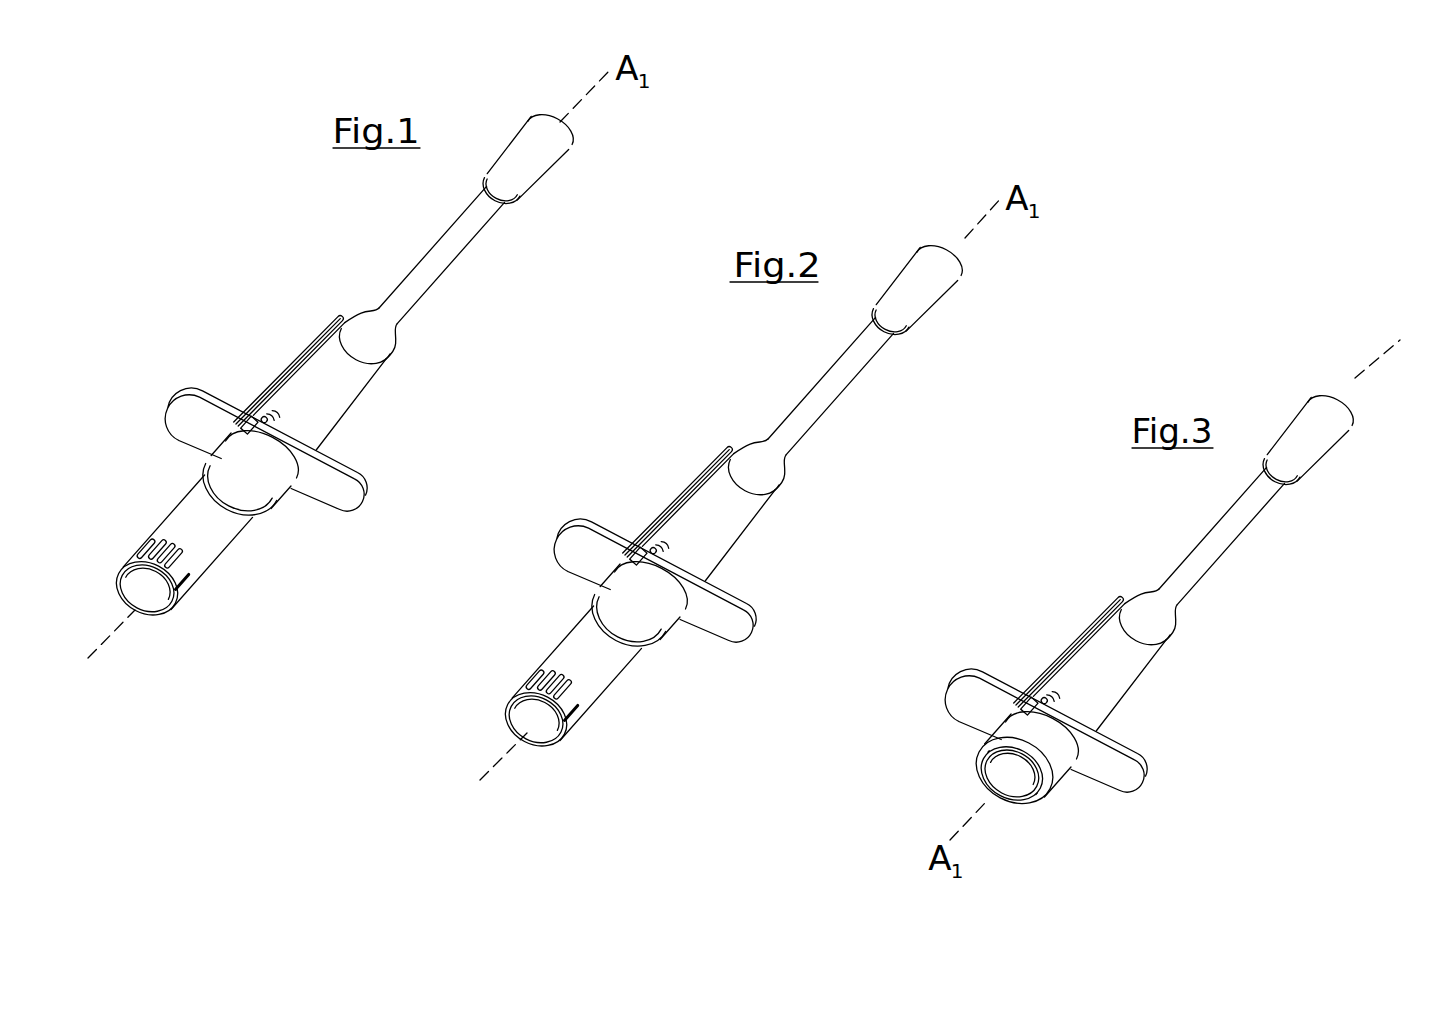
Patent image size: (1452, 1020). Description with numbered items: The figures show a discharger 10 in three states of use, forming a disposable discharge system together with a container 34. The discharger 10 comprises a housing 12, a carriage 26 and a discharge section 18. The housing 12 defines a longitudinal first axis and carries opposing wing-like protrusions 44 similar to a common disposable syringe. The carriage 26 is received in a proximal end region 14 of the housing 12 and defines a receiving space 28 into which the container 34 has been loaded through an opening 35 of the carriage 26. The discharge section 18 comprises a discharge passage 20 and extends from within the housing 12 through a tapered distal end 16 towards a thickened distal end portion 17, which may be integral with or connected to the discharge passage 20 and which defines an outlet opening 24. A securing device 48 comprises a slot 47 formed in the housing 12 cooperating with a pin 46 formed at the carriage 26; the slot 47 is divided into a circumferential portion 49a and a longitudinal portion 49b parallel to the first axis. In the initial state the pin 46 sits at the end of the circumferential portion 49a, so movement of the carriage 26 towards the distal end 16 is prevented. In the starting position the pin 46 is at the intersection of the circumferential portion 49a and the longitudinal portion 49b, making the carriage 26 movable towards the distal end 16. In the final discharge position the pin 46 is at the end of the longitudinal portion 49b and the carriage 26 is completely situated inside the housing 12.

In FIG. 1, the discharger 10 is at (278, 195).
In FIG. 1, the housing 12 is at (373, 383).
In FIG. 2, the housing 12 is at (713, 518).
In FIG. 3, the housing 12 is at (1104, 668).
In FIG. 1, the proximal end region 14 is at (280, 487).
In FIG. 2, the proximal end region 14 is at (667, 620).
In FIG. 3, the proximal end region 14 is at (1067, 758).
In FIG. 1, the tapered distal end 16 is at (387, 327).
In FIG. 2, the tapered distal end 16 is at (777, 457).
In FIG. 3, the tapered distal end 16 is at (1175, 602).
In FIG. 1, the thickened distal end portion 17 is at (547, 153).
In FIG. 2, the thickened distal end portion 17 is at (927, 292).
In FIG. 3, the thickened distal end portion 17 is at (1322, 442).
In FIG. 1, the discharge section 18 is at (484, 257).
In FIG. 2, the discharge section 18 is at (861, 399).
In FIG. 3, the discharge section 18 is at (1236, 567).
In FIG. 1, the discharge passage 20 is at (480, 217).
In FIG. 2, the discharge passage 20 is at (855, 360).
In FIG. 3, the discharge passage 20 is at (1263, 503).
In FIG. 1, the outlet opening 24 is at (589, 128).
In FIG. 2, the outlet opening 24 is at (980, 258).
In FIG. 3, the outlet opening 24 is at (1364, 394).
In FIG. 1, the carriage 26 is at (230, 527).
In FIG. 2, the carriage 26 is at (620, 663).
In FIG. 3, the carriage 26 is at (1047, 767).
In FIG. 1, the receiving space 28 is at (174, 625).
In FIG. 2, the receiving space 28 is at (557, 763).
In FIG. 3, the receiving space 28 is at (973, 779).
In FIG. 1, the container 34 is at (152, 593).
In FIG. 2, the container 34 is at (538, 742).
In FIG. 3, the container 34 is at (1015, 767).
In FIG. 1, the opening 35 is at (131, 580).
In FIG. 2, the opening 35 is at (508, 718).
In FIG. 3, the opening 35 is at (987, 758).
In FIG. 1, the wing-like protrusions 44 is at (187, 422).
In FIG. 2, the wing-like protrusions 44 is at (573, 563).
In FIG. 3, the wing-like protrusions 44 is at (1122, 773).
In FIG. 1, the pin 46 is at (310, 430).
In FIG. 2, the pin 46 is at (643, 543).
In FIG. 3, the pin 46 is at (1122, 595).
In FIG. 1, the slot 47 is at (298, 342).
In FIG. 2, the slot 47 is at (664, 500).
In FIG. 3, the slot 47 is at (1035, 669).
In FIG. 1, the securing device 48 is at (293, 409).
In FIG. 2, the securing device 48 is at (686, 542).
In FIG. 3, the securing device 48 is at (1076, 682).
In FIG. 1, the circumferential portion 49a is at (253, 427).
In FIG. 2, the circumferential portion 49a is at (693, 563).
In FIG. 3, the circumferential portion 49a is at (1082, 703).
In FIG. 1, the longitudinal portion 49b is at (283, 392).
In FIG. 2, the longitudinal portion 49b is at (705, 478).
In FIG. 3, the longitudinal portion 49b is at (1093, 640).